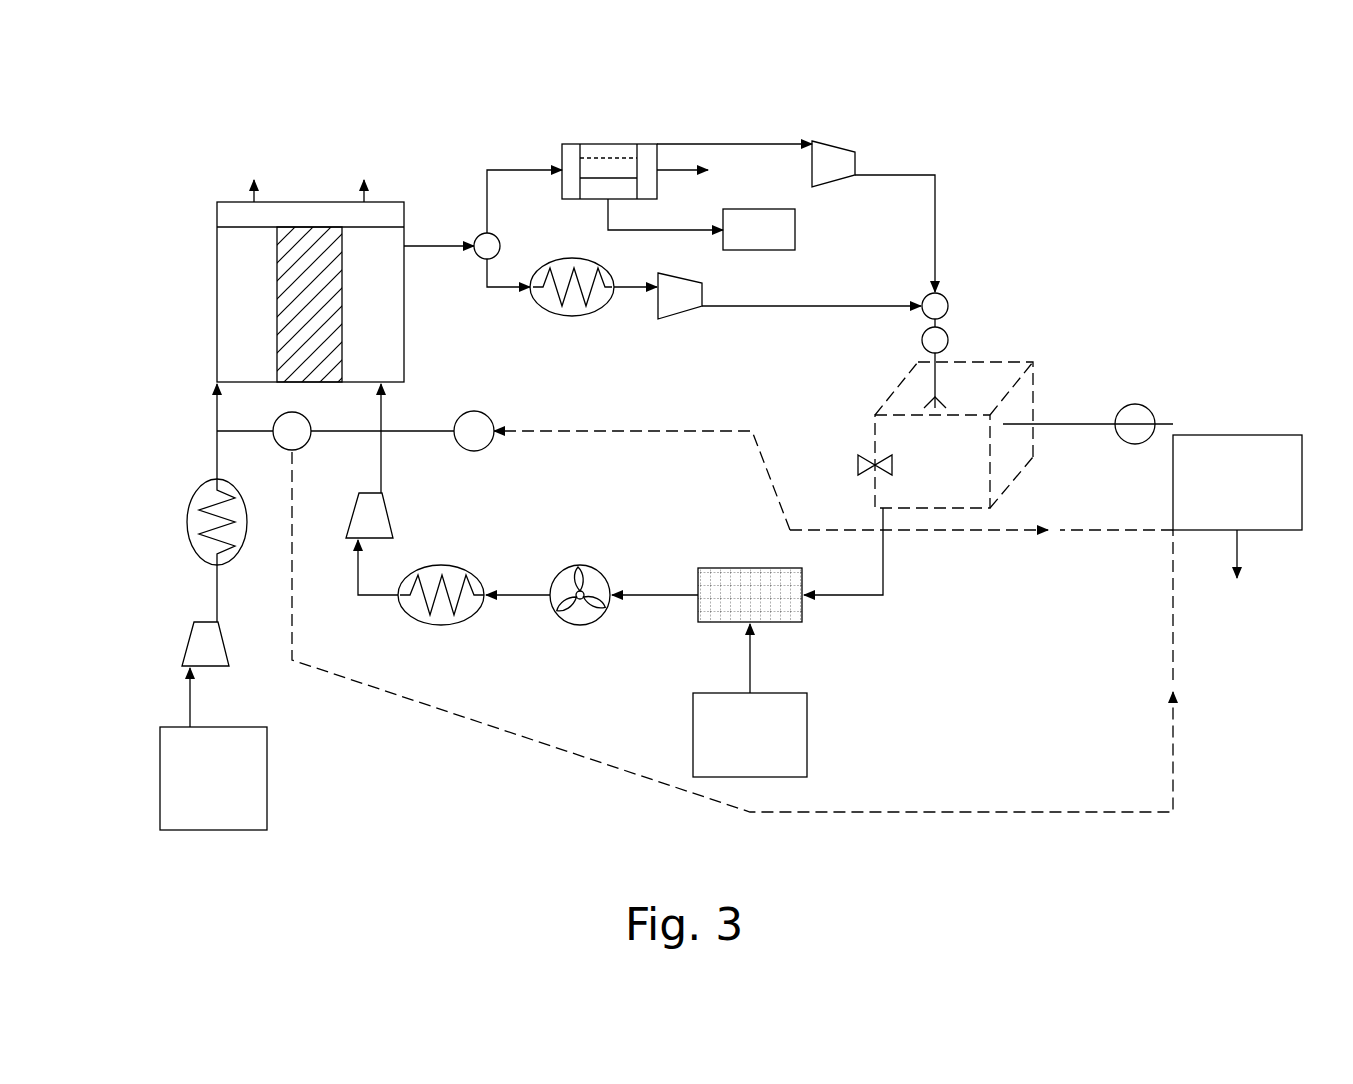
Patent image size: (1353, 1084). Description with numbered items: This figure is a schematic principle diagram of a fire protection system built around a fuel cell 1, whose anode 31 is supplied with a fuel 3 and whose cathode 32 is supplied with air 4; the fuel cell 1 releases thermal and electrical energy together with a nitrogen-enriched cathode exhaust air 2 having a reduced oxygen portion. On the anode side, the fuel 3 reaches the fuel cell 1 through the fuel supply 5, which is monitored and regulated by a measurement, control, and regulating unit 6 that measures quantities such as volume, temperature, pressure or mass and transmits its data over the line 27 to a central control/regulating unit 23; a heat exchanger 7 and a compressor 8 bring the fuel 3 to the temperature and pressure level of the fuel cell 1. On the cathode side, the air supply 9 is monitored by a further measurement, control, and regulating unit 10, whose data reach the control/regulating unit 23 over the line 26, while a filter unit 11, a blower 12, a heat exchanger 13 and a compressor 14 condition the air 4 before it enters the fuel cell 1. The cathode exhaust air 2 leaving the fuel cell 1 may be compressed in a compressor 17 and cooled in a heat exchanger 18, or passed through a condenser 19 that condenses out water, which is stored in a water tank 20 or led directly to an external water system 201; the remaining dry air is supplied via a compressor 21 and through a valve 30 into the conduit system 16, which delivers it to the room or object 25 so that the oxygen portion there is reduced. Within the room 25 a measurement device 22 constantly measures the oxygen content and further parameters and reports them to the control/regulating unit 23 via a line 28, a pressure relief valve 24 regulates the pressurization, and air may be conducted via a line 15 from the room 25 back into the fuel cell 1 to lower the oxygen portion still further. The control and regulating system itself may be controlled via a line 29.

The fuel cell 1 is at (217, 265).
The nitrogen-enriched cathode exhaust air 2 is at (434, 243).
The fuel 3 is at (267, 782).
The air 4 is at (807, 737).
The fuel supply 5 is at (217, 418).
The measurement, control, and regulating unit 6 is at (308, 445).
The heat exchanger 7 is at (187, 520).
The compressor 8 is at (188, 640).
The cathode-side air supply 9 is at (381, 410).
The measurement, control, and regulating unit 10 is at (488, 447).
The filter unit 11 is at (748, 568).
The blower 12 is at (582, 565).
The heat exchanger 13 is at (447, 565).
The compressor 14 is at (391, 517).
The line 15 is at (883, 575).
The conduit system 16 is at (935, 385).
The compressor 17 is at (678, 319).
The heat exchanger 18 is at (572, 316).
The condenser 19 is at (607, 144).
The water tank 20 is at (795, 228).
The external water system 201 is at (723, 226).
The compressor 21 is at (832, 141).
The measurement device 22 is at (1135, 404).
The central control/regulating unit 23 is at (1298, 435).
The pressure relief valve 24 is at (858, 465).
The room 25 is at (945, 505).
The line 26 is at (1087, 530).
The line 27 is at (1030, 812).
The line 28 is at (1178, 428).
The line 29 is at (1240, 550).
The valve 30 is at (948, 340).
The anode 31 is at (217, 362).
The cathode 32 is at (404, 335).